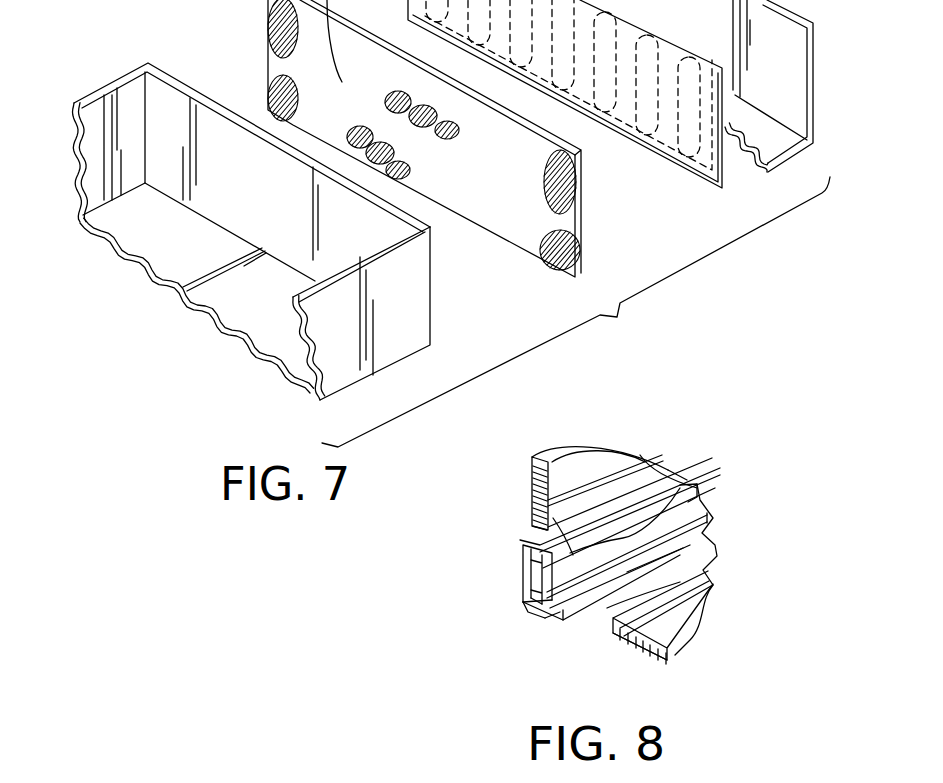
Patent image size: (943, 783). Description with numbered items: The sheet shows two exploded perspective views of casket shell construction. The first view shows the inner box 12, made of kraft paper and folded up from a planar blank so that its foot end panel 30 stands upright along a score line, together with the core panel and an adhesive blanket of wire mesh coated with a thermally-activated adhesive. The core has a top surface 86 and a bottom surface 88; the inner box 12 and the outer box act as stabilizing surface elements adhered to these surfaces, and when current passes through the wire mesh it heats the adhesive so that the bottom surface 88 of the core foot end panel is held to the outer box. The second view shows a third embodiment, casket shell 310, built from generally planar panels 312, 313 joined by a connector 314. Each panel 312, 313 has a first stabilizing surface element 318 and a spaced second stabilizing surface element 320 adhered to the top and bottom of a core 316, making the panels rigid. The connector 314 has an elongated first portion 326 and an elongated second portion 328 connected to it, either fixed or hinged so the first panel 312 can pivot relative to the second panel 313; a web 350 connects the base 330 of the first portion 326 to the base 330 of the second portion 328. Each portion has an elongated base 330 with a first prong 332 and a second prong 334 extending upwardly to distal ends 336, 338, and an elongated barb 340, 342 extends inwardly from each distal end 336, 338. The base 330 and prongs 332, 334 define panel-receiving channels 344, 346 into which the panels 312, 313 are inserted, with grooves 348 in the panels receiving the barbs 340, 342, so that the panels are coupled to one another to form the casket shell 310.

In FIG. 7, the inner box 12 is at (72, 65).
In FIG. 7, the foot end panel 30 is at (237, 180).
In FIG. 7, the top surface 86 is at (495, 197).
In FIG. 7, the bottom surface 88 is at (592, 211).
In FIG. 8, the casket shell 310 is at (774, 414).
In FIG. 8, the first panel 312 is at (600, 445).
In FIG. 8, the second panel 313 is at (693, 652).
In FIG. 8, the connector 314 is at (762, 490).
In FIG. 8, the core 316 is at (550, 458).
In FIG. 8, the first stabilizing surface element 318 is at (530, 470).
In FIG. 8, the second stabilizing surface element 320 is at (573, 442).
In FIG. 8, the first portion 326 is at (480, 577).
In FIG. 8, the second portion 328 is at (548, 636).
In FIG. 8, the base 330 is at (707, 547).
In FIG. 8, the first prong 332 is at (700, 513).
In FIG. 8, the second prong 334 is at (688, 483).
In FIG. 8, the distal end 336 is at (707, 525).
In FIG. 8, the distal end 338 is at (650, 492).
In FIG. 8, the barb 340 is at (703, 567).
In FIG. 8, the barb 342 is at (537, 540).
In FIG. 8, the panel-receiving channel 344 is at (523, 603).
In FIG. 8, the panel-receiving channel 346 is at (551, 622).
In FIG. 8, the groove 348 is at (647, 470).
In FIG. 8, the web 350 is at (533, 607).